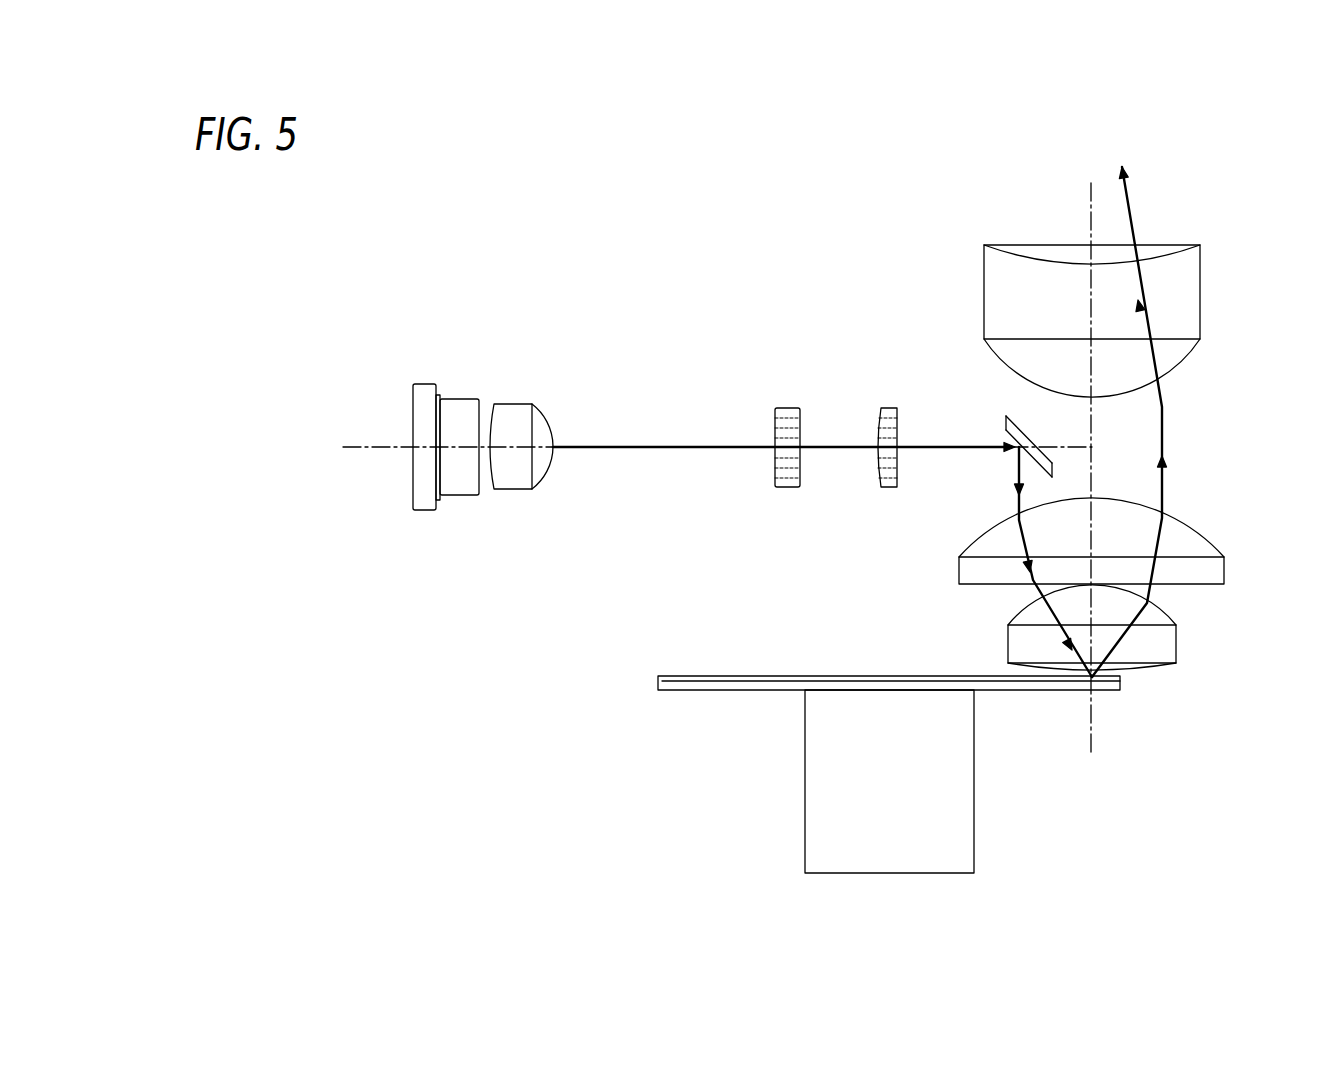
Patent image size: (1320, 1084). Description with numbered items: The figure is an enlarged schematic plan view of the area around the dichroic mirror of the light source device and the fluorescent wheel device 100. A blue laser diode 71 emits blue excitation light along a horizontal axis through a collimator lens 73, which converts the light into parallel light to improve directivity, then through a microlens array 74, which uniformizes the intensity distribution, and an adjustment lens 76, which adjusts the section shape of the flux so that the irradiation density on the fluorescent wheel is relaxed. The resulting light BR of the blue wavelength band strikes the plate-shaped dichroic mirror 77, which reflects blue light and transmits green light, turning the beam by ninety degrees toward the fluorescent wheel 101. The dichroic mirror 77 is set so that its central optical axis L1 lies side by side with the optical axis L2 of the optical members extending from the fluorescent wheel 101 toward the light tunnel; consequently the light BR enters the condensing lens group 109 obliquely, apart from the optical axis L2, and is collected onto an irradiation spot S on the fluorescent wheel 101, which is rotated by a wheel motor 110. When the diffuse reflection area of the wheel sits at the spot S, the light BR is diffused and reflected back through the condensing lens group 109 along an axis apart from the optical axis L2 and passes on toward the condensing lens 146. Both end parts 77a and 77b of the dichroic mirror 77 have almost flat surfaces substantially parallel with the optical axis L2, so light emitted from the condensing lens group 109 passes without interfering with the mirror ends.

The blue laser diode 71 is at (425, 503).
The collimator lens 73 is at (516, 482).
The microlens array 74 is at (785, 405).
The adjustment lens 76 is at (888, 405).
The dichroic mirror 77 is at (1029, 435).
The end part of dichroic mirror 77a is at (1007, 430).
The end part of dichroic mirror 77b is at (1053, 470).
The condensing lens 146 is at (1202, 270).
The condensing lens group 109 is at (1212, 625).
The fluorescent wheel 101 is at (697, 685).
The wheel motor 110 is at (812, 830).
The fluorescent wheel device 100 is at (1106, 794).
The irradiation spot S is at (1094, 675).
The optical axis of dichroic mirror L1 is at (1010, 406).
The optical axis of optical members L2 is at (1090, 228).
The light of blue wavelength band BR is at (938, 452).